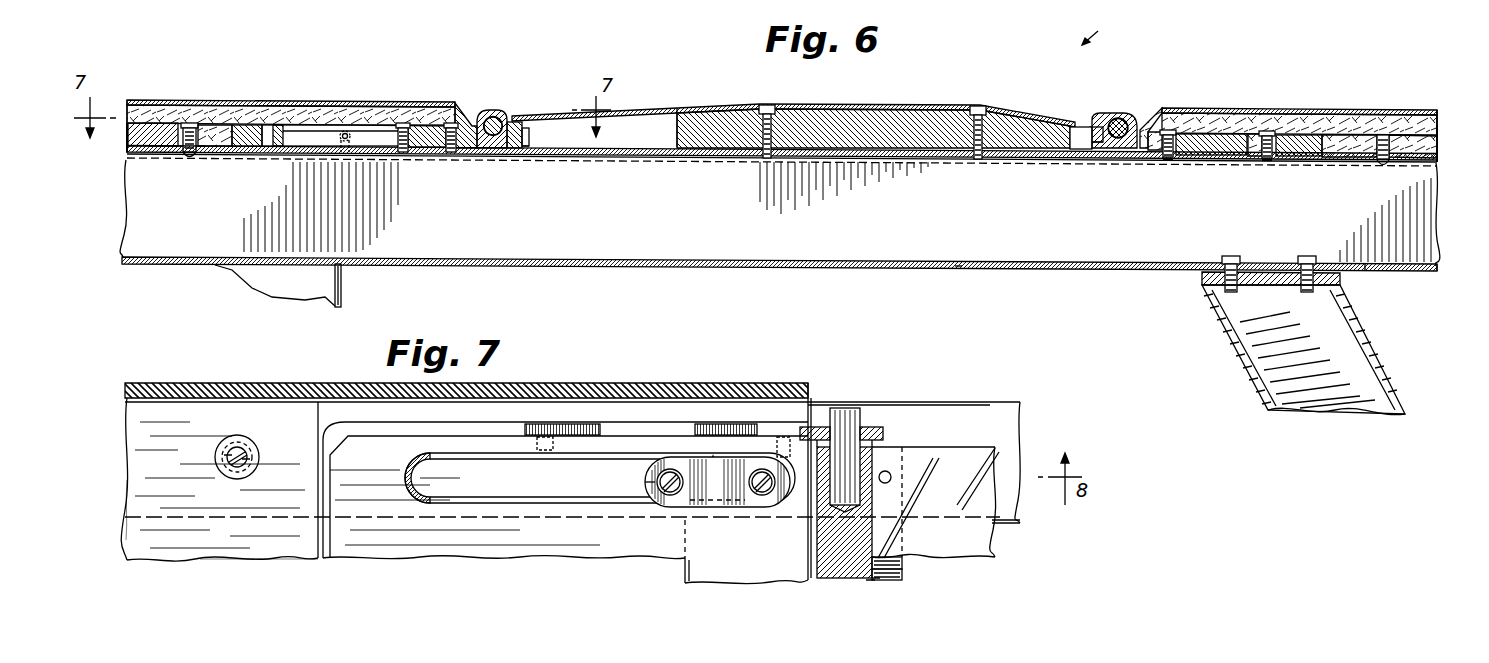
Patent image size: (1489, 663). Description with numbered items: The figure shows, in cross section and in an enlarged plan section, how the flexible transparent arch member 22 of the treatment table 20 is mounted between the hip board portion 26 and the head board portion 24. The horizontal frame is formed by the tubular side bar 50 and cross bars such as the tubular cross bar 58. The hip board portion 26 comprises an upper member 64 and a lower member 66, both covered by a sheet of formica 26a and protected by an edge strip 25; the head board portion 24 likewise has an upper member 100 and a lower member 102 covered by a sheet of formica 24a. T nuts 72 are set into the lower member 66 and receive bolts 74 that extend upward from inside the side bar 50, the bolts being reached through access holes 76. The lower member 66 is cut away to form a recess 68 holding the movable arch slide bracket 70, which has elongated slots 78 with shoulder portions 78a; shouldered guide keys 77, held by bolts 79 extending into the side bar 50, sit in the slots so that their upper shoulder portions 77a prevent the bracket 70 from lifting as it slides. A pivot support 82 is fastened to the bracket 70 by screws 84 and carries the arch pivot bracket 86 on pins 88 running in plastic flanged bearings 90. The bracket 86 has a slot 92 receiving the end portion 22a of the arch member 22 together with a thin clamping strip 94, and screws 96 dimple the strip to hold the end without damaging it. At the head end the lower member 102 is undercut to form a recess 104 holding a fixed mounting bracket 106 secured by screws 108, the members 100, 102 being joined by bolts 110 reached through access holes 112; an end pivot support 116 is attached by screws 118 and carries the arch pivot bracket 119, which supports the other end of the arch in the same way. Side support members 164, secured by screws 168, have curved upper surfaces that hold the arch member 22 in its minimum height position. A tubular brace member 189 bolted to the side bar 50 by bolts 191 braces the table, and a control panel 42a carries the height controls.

In FIG. 6, the table 20 is at (1102, 33).
In FIG. 6, the arch member 22 is at (650, 107).
In FIG. 7, the arch member 22 is at (996, 548).
In FIG. 7, the end portion 22a is at (886, 574).
In FIG. 6, the head board portion 24 is at (1375, 110).
In FIG. 6, the sheet of formica 24a is at (1340, 110).
In FIG. 7, the edge strip 25 is at (130, 383).
In FIG. 6, the hip board portion 26 is at (150, 100).
In FIG. 7, the hip board portion 26 is at (163, 561).
In FIG. 6, the sheet of formica 26a is at (180, 100).
In FIG. 6, the control panel 42a is at (341, 290).
In FIG. 6, the tubular side bar 50 is at (958, 266).
In FIG. 7, the tubular side bar 50 is at (1015, 441).
In FIG. 7, the tubular cross bar 58 is at (690, 581).
In FIG. 6, the upper member 64 is at (131, 110).
In FIG. 6, the lower member 66 is at (127, 126).
In FIG. 7, the lower member 66 is at (256, 550).
In FIG. 6, the recess 68 is at (243, 125).
In FIG. 7, the recess 68 is at (338, 423).
In FIG. 6, the movable arch slide bracket 70 is at (262, 147).
In FIG. 7, the movable arch slide bracket 70 is at (582, 543).
In FIG. 6, the T nut 72 is at (170, 148).
In FIG. 7, the T nut 72 is at (226, 440).
In FIG. 6, the bolt 74 is at (190, 160).
In FIG. 7, the bolt 74 is at (243, 450).
In FIG. 6, the access hole 76 is at (190, 266).
In FIG. 6, the shouldered guide key 77 is at (427, 125).
In FIG. 7, the shouldered guide key 77 is at (730, 469).
In FIG. 6, the upper shoulder portion 77a is at (350, 141).
In FIG. 7, the upper shoulder portion 77a is at (645, 482).
In FIG. 6, the elongated slot 78 is at (292, 147).
In FIG. 7, the elongated slot 78 is at (478, 494).
In FIG. 6, the shoulder portion 78a is at (300, 125).
In FIG. 7, the shoulder portion 78a is at (440, 498).
In FIG. 6, the bolt 79 is at (451, 155).
In FIG. 7, the bolt 79 is at (668, 469).
In FIG. 6, the pivot support 82 is at (487, 111).
In FIG. 7, the pivot support 82 is at (874, 437).
In FIG. 6, the screw 84 is at (344, 153).
In FIG. 7, the screw 84 is at (575, 422).
In FIG. 6, the arch pivot bracket 86 is at (514, 128).
In FIG. 7, the arch pivot bracket 86 is at (832, 580).
In FIG. 6, the pin 88 is at (495, 125).
In FIG. 7, the pin 88 is at (842, 408).
In FIG. 7, the flanged bearing 90 is at (864, 427).
In FIG. 7, the slot 92 is at (873, 582).
In FIG. 6, the clamping strip 94 is at (526, 137).
In FIG. 7, the clamping strip 94 is at (900, 566).
In FIG. 6, the screw 96 is at (516, 149).
In FIG. 7, the screw 96 is at (890, 471).
In FIG. 6, the upper member 100 is at (1437, 118).
In FIG. 6, the lower member 102 is at (1437, 142).
In FIG. 6, the recess 104 is at (1305, 137).
In FIG. 6, the fixed mounting bracket 106 is at (1210, 157).
In FIG. 6, the screw 108 is at (1166, 132).
In FIG. 6, the bolt 110 is at (1383, 167).
In FIG. 6, the access hole 112 is at (1383, 273).
In FIG. 6, the end pivot support 116 is at (1128, 114).
In FIG. 6, the screw 118 is at (1165, 161).
In FIG. 6, the arch pivot bracket 119 is at (1081, 127).
In FIG. 6, the side support member 164 is at (876, 119).
In FIG. 6, the screw 168 is at (766, 159).
In FIG. 6, the tubular brace member 189 is at (1385, 376).
In FIG. 6, the bolt 191 is at (1306, 256).